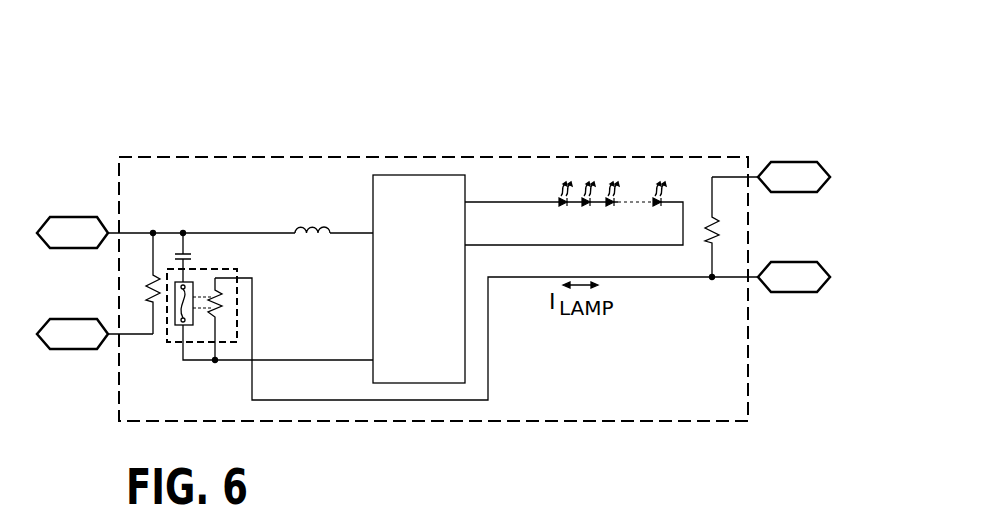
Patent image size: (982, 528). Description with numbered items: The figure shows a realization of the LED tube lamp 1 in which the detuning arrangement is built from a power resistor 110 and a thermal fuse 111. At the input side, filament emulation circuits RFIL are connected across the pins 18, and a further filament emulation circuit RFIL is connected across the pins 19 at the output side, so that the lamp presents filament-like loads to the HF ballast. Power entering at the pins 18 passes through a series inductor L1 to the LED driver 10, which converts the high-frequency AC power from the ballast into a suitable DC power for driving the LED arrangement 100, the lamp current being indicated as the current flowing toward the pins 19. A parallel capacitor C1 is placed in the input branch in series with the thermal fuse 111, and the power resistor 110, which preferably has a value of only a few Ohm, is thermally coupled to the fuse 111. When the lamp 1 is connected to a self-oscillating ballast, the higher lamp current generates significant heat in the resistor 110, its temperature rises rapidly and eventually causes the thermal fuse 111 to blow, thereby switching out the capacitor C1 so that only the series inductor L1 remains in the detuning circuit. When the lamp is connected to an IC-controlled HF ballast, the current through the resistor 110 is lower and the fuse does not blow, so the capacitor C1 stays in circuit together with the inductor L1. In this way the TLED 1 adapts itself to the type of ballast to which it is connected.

The LED tube lamp 1 is at (580, 120).
The LED driver 10 is at (420, 175).
The LED arrangement 100 is at (672, 180).
The power resistor 110 is at (222, 318).
The thermal fuse 111 is at (173, 322).
The pins 18 is at (75, 217).
The pins 19 is at (790, 162).
The filament emulation circuit RFIL is at (778, 228).
The parallel capacitor C1 is at (190, 257).
The series inductor L1 is at (313, 240).